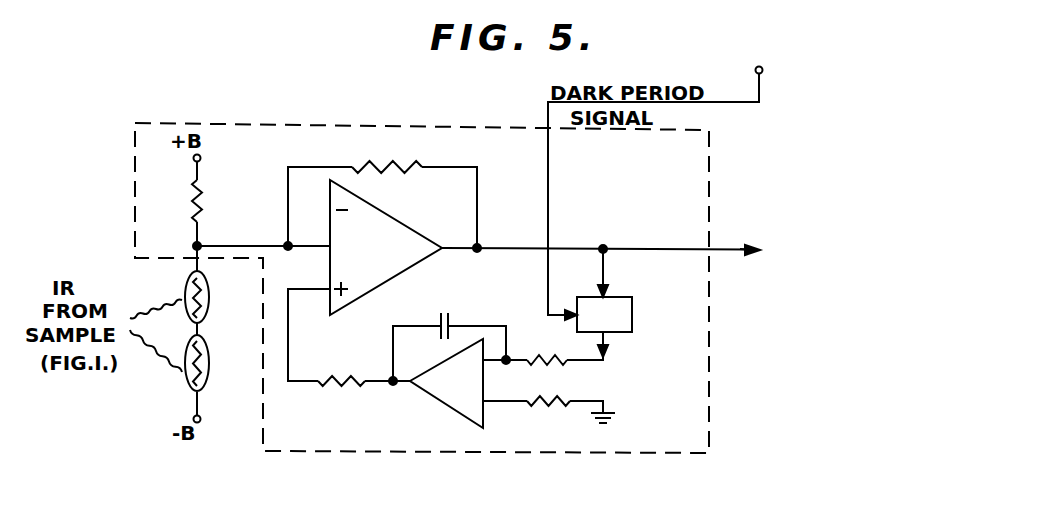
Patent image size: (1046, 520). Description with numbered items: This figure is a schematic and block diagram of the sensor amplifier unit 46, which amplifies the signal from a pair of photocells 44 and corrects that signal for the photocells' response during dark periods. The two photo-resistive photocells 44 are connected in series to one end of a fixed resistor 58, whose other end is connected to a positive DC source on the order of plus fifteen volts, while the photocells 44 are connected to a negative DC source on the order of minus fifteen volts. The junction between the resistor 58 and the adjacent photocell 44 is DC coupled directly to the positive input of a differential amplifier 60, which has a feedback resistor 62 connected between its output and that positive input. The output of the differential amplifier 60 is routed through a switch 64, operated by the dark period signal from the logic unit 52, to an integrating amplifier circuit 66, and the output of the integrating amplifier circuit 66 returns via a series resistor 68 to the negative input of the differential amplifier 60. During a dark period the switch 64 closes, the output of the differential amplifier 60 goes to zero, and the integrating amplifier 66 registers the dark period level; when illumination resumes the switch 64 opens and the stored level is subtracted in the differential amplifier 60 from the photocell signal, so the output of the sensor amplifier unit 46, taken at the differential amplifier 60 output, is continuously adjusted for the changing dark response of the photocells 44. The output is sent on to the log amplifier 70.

The sensor amplifier unit 46 is at (158, 95).
The fixed resistor 58 is at (203, 200).
The feedback resistor 62 is at (400, 166).
The differential amplifier 60 is at (418, 263).
The photocells 44 is at (210, 296).
The series resistor 68 is at (358, 384).
The integrating amplifier circuit 66 is at (424, 405).
The switch 64 is at (626, 298).
The logic unit 52 is at (817, 50).
The logarithmic amplifier 70 is at (828, 253).